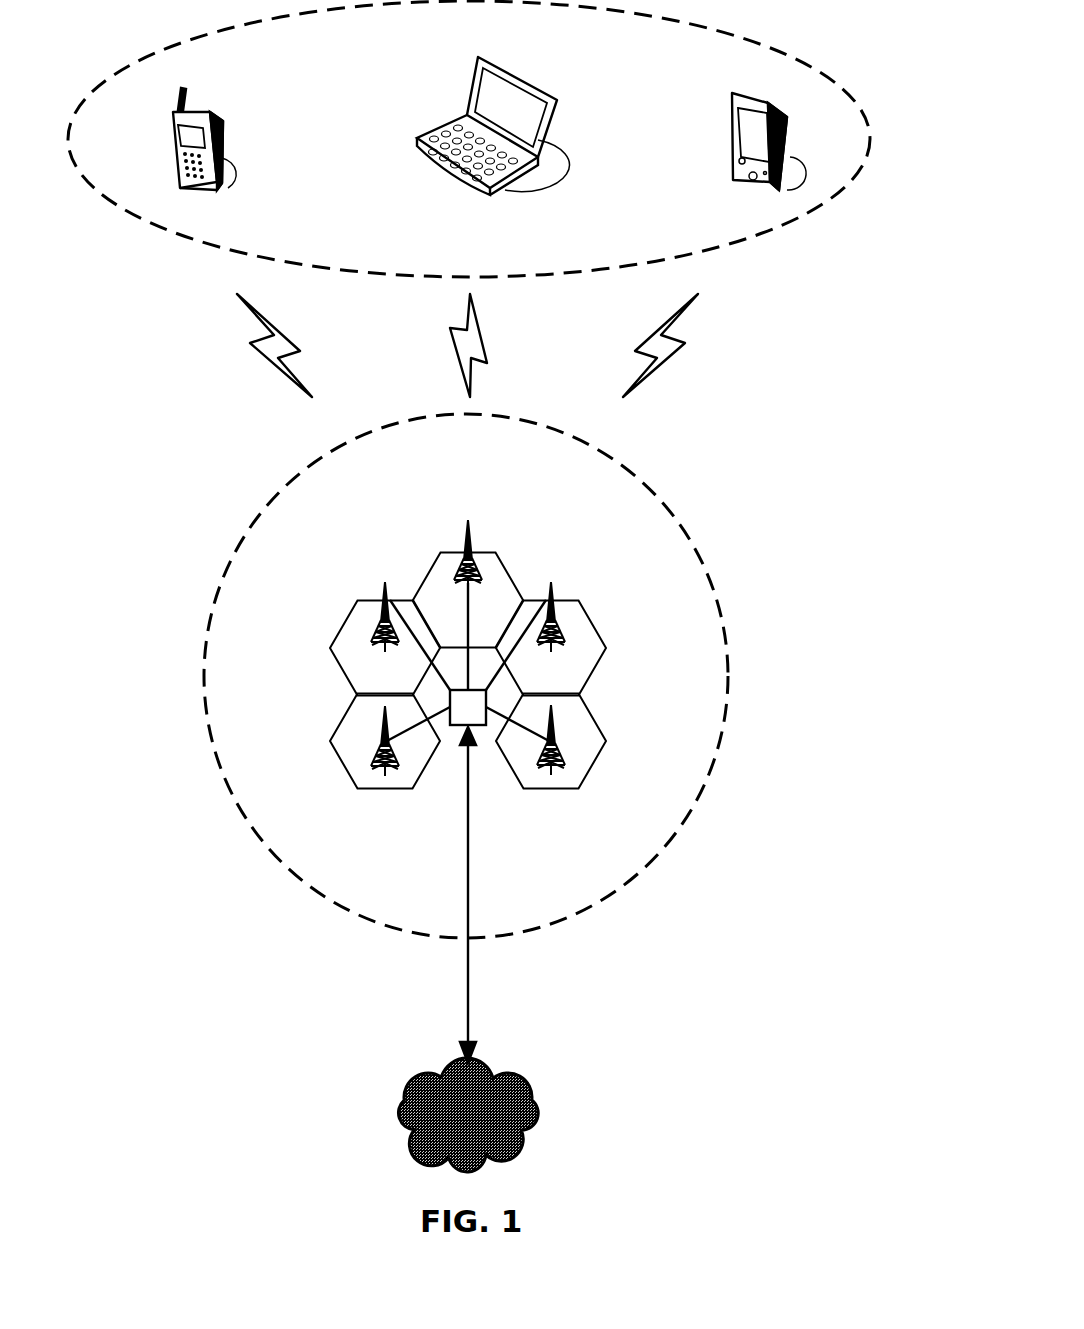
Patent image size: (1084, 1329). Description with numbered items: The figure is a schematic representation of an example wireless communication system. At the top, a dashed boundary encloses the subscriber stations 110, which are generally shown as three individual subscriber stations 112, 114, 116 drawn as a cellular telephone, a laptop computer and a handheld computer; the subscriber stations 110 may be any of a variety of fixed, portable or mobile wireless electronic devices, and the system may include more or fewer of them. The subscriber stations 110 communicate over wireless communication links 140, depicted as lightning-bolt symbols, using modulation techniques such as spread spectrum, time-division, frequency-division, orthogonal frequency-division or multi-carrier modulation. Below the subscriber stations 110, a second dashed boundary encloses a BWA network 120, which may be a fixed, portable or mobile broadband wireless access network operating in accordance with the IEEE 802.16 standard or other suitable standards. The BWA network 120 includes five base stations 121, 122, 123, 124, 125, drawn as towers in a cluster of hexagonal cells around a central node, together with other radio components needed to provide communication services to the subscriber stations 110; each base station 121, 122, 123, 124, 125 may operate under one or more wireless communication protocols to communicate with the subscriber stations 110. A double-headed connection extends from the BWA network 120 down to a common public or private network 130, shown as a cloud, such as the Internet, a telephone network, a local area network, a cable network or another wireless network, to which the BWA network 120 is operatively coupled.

The subscriber stations 110 is at (873, 133).
The subscriber station 112 is at (230, 127).
The subscriber station 114 is at (453, 126).
The subscriber station 116 is at (730, 116).
The BWA network 120 is at (509, 738).
The base station 121 is at (451, 577).
The base station 122 is at (584, 631).
The base station 123 is at (603, 736).
The base station 124 is at (348, 737).
The base station 125 is at (366, 631).
The common public or private network 130 is at (509, 1115).
The wireless communication links 140 is at (430, 359).